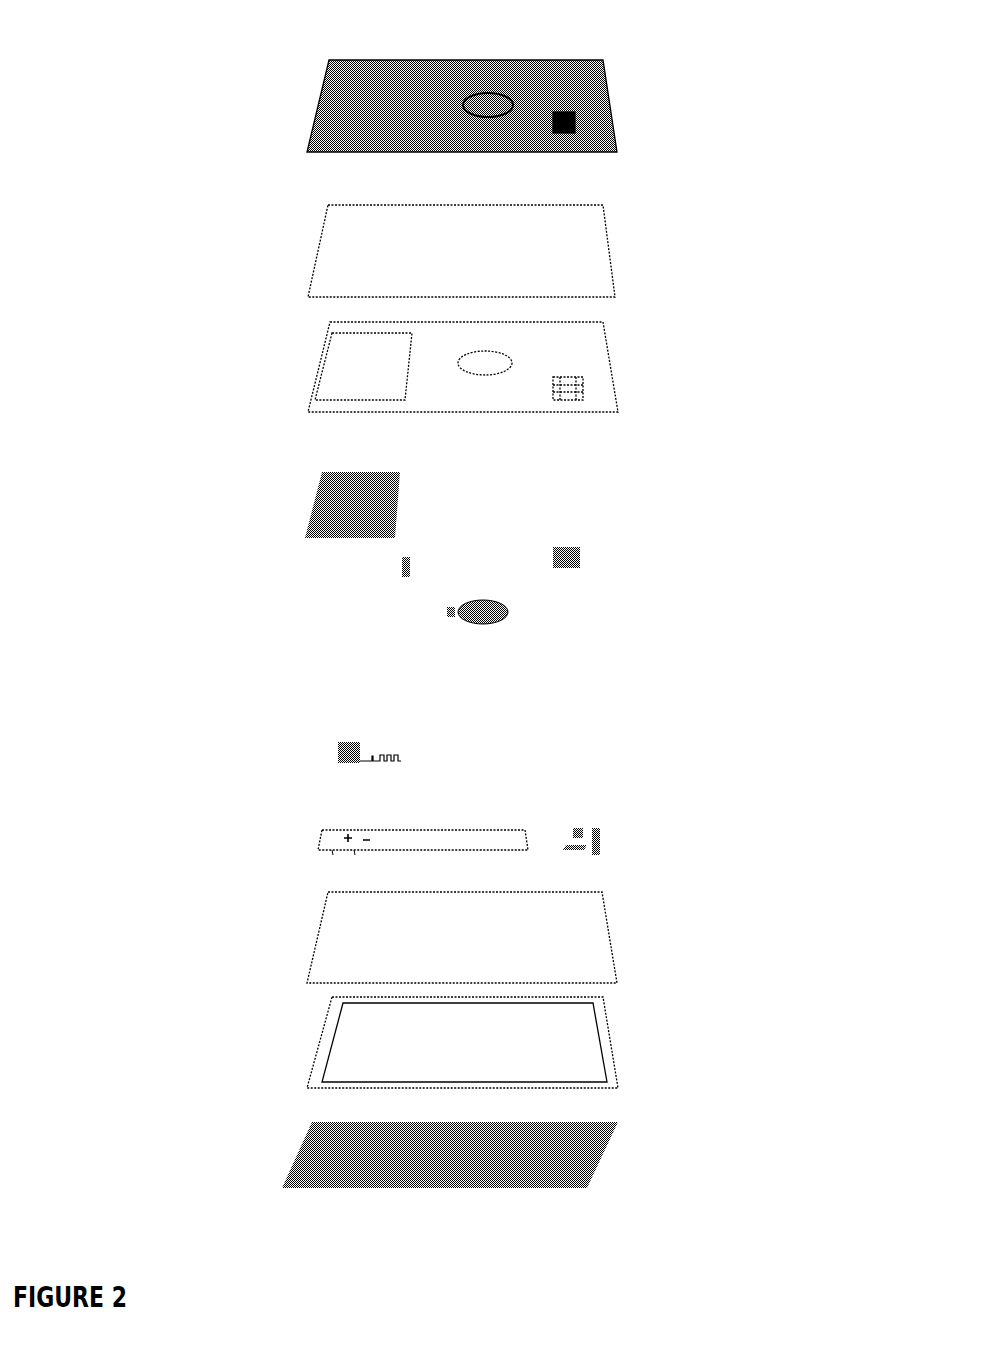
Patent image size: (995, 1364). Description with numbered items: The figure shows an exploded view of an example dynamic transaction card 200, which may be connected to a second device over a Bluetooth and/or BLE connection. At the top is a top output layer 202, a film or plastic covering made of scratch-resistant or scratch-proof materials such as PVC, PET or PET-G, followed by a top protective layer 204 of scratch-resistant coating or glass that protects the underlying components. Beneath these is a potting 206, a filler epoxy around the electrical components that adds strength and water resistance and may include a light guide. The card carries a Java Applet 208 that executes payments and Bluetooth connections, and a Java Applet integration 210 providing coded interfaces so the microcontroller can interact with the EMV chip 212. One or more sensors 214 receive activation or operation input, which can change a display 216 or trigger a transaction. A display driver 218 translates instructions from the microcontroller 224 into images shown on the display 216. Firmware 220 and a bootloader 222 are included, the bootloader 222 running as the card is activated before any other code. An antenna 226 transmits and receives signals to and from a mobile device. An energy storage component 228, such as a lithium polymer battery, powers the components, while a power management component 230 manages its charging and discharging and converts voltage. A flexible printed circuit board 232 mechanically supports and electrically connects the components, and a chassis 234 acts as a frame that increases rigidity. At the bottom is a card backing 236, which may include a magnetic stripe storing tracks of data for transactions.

The dynamic transaction card 200 is at (429, 594).
The top output layer 202 is at (613, 100).
The top protective layer 204 is at (683, 250).
The potting 206 is at (643, 360).
The Java Applet 208 is at (622, 455).
The Java Applet integration 210 is at (622, 508).
The EMV chip 212 is at (587, 555).
The sensors 214 is at (518, 608).
The display 216 is at (313, 488).
The display driver 218 is at (398, 565).
The firmware 220 is at (312, 630).
The bootloader 222 is at (320, 693).
The microcontroller 224 is at (335, 752).
The antenna 226 is at (378, 767).
The energy storage component 228 is at (532, 838).
The power management component 230 is at (602, 836).
The flexible printed circuit board 232 is at (303, 963).
The chassis 234 is at (622, 1037).
The card backing 236 is at (613, 1133).